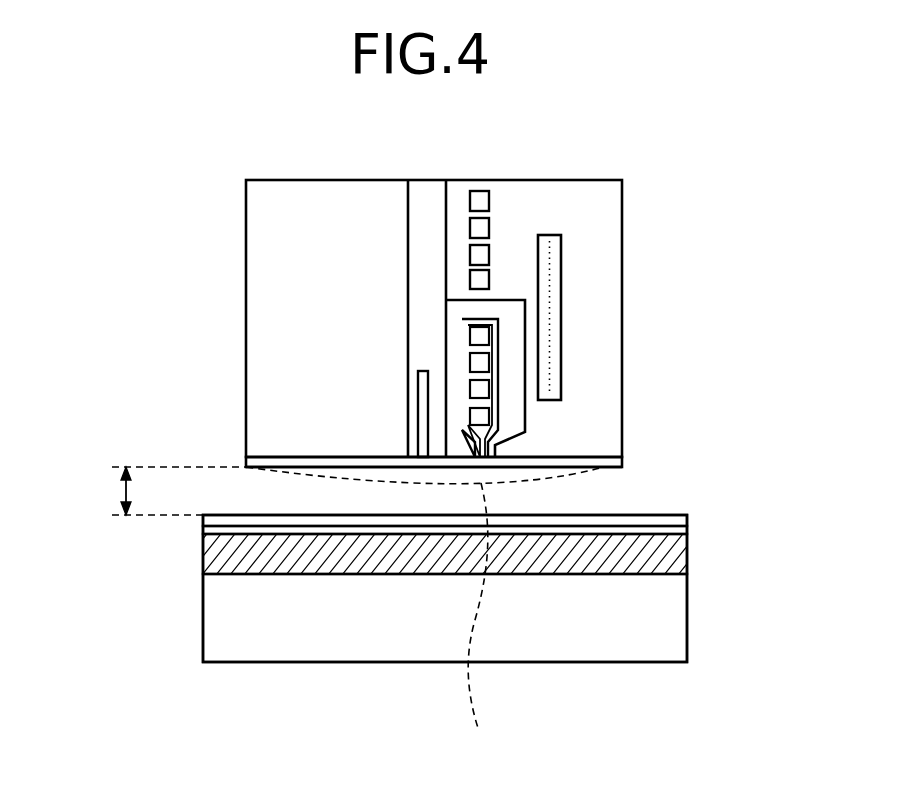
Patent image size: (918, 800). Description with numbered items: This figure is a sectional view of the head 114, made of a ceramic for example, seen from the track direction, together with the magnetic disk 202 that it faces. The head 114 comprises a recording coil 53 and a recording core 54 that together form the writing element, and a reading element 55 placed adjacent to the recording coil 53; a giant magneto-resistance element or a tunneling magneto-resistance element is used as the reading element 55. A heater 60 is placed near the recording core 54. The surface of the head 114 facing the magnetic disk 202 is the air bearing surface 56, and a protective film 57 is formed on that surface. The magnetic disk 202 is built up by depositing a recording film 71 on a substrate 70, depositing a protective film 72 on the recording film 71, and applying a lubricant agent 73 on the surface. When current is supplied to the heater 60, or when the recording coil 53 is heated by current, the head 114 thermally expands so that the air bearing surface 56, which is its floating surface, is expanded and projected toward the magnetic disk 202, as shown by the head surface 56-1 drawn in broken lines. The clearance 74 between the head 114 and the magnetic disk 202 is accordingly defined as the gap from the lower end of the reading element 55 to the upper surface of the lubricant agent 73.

The head 114 is at (225, 224).
The recording coil 53 is at (481, 191).
The recording core 54 is at (513, 300).
The heater 60 is at (562, 283).
The reading element 55 is at (418, 397).
The air bearing surface (ABS) 56 is at (596, 457).
The protective film 57 is at (595, 469).
The head surface 56-1 is at (485, 624).
The clearance 74 is at (118, 489).
The magnetic disk 202 is at (199, 605).
The lubricant agent 73 is at (687, 517).
The protective film 72 is at (687, 530).
The recording film 71 is at (573, 562).
The substrate 70 is at (398, 652).